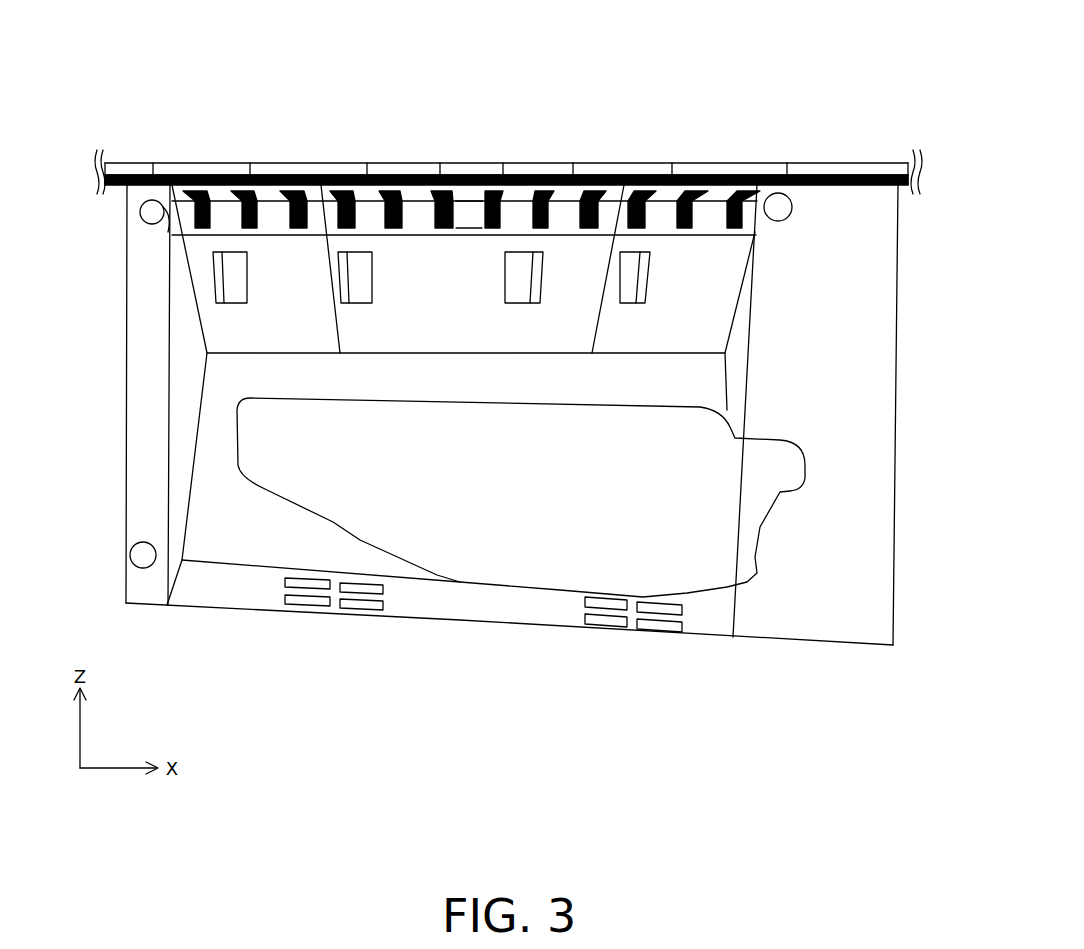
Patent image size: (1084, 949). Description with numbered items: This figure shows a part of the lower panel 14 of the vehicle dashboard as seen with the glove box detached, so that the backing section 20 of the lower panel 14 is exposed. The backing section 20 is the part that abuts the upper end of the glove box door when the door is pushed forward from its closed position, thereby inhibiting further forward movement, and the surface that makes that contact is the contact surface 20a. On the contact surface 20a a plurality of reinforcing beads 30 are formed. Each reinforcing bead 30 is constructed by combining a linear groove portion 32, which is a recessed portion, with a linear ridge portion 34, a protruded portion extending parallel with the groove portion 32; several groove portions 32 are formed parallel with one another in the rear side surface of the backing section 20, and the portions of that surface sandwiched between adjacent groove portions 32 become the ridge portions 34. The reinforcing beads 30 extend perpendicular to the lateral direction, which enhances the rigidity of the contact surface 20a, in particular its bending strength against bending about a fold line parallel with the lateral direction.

The lower panel 14 is at (780, 146).
The backing section 20 is at (777, 183).
The contact surface 20a is at (145, 220).
The reinforcing bead 30 is at (471, 135).
The groove portion 32 is at (442, 205).
The ridge portion 34 is at (470, 205).